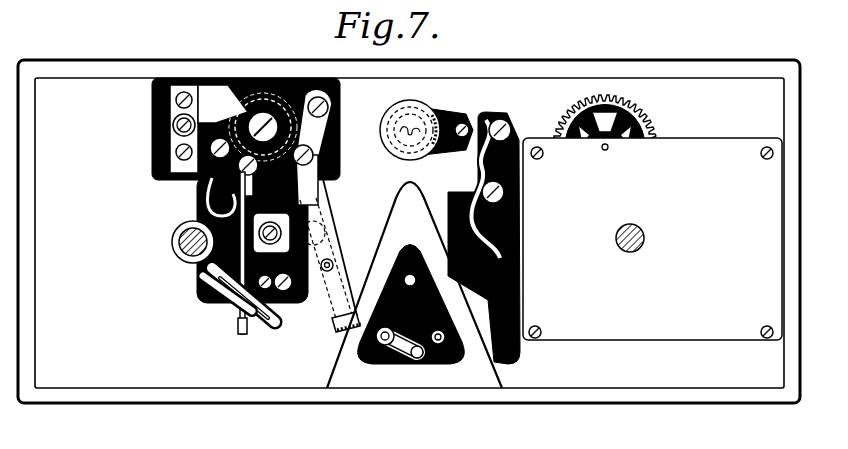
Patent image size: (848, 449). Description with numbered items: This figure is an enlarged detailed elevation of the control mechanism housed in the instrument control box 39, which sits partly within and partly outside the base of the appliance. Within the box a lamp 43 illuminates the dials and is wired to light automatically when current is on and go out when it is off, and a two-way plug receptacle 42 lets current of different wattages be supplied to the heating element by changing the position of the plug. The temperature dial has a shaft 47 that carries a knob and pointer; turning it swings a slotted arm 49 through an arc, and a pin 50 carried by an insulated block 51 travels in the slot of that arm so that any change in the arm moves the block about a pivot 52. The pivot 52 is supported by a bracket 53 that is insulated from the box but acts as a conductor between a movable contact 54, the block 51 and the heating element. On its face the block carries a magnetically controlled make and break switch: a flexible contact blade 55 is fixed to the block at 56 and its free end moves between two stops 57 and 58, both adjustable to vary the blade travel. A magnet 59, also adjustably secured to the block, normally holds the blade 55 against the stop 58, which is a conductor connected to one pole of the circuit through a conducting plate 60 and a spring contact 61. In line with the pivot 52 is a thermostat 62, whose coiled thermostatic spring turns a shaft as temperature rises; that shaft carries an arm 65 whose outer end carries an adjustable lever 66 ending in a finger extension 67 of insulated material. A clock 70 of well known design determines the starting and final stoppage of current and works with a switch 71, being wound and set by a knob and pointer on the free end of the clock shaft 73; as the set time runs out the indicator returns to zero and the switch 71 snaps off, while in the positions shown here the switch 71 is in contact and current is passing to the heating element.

The instrument control box 39 is at (553, 85).
The receptacle 42 is at (438, 340).
The lamp 43 is at (425, 108).
The shaft 47 is at (190, 242).
The slotted arm 49 is at (268, 334).
The pin 50 is at (247, 330).
The insulated block 51 is at (203, 198).
The pivot 52 is at (252, 120).
The bracket 53 is at (207, 98).
The movable contact 54 is at (213, 182).
The flexible contact blade 55 is at (238, 326).
The fixing point 56 is at (220, 133).
The stop 57 is at (212, 296).
The stop 58 is at (278, 308).
The magnet 59 is at (285, 216).
The conducting plate 60 is at (308, 192).
The spring contact 61 is at (320, 128).
The thermostat 62 is at (275, 95).
The arm 65 is at (342, 240).
The adjustable lever 66 is at (370, 236).
The finger extension 67 is at (331, 328).
The clock 70 is at (682, 157).
The switch 71 is at (523, 218).
The clock shaft 73 is at (645, 238).